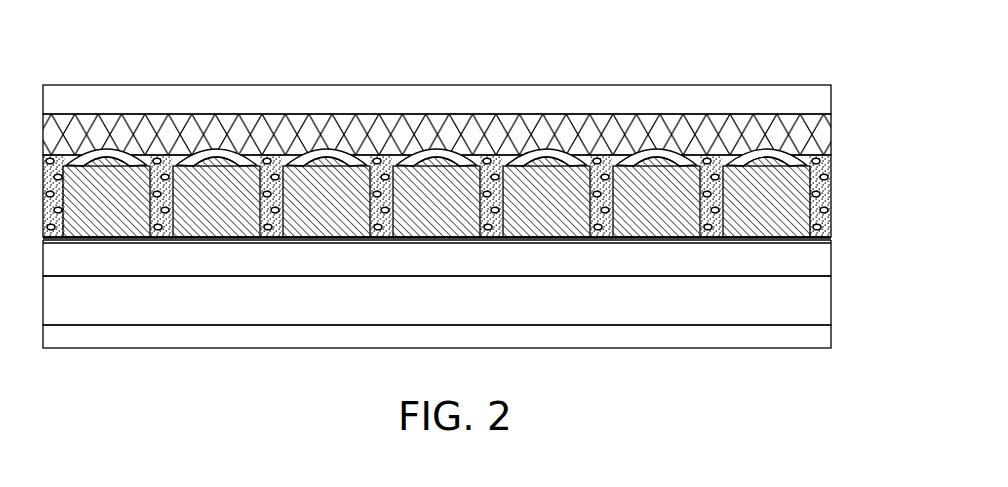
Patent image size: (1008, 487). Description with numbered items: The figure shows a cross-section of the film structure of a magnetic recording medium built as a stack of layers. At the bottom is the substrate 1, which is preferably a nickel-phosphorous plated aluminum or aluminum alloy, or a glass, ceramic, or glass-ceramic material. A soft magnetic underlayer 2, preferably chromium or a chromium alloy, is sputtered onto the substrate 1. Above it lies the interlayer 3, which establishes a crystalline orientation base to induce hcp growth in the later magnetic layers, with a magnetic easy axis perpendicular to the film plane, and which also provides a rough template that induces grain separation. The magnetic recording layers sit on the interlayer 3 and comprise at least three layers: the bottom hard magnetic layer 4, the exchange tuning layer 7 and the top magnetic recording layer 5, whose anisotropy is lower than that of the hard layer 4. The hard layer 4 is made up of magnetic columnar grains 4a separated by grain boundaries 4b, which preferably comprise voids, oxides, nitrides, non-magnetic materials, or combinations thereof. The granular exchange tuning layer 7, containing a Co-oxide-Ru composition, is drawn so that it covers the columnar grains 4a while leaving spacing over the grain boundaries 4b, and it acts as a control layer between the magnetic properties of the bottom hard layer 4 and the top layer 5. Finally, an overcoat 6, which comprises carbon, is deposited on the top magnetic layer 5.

The substrate 1 is at (66, 342).
The soft magnetic underlayer 2 is at (188, 307).
The interlayer 3 is at (297, 268).
The bottom hard magnetic layer 4 is at (838, 153).
The magnetic columnar grains 4a is at (558, 170).
The grain boundaries 4b is at (715, 168).
The top magnetic recording layer 5 is at (160, 122).
The overcoat 6 is at (315, 97).
The exchange tuning layer 7 is at (532, 152).